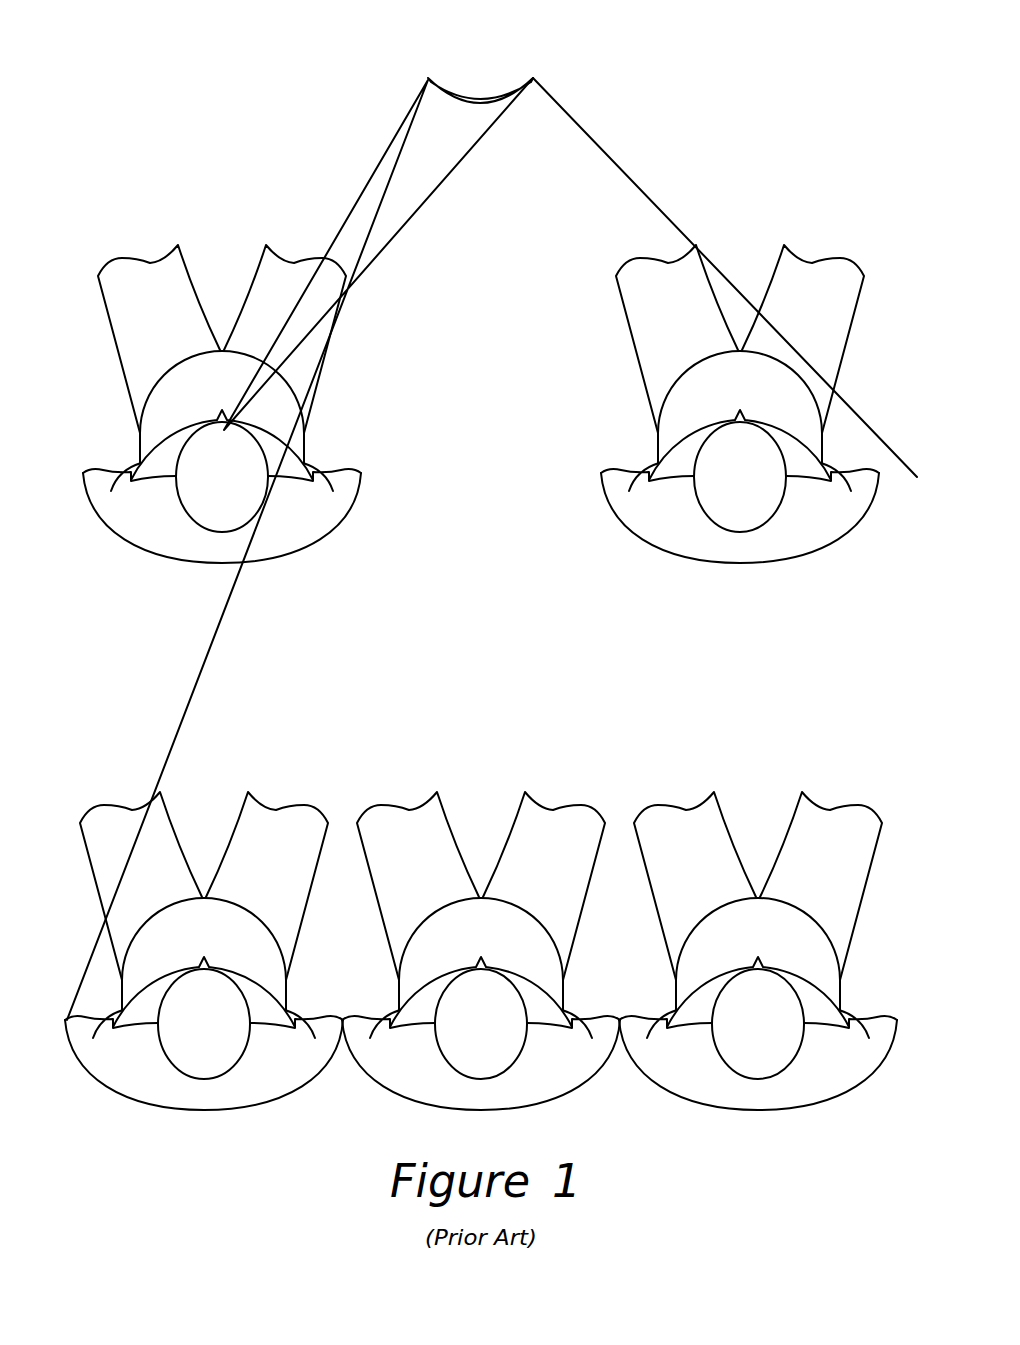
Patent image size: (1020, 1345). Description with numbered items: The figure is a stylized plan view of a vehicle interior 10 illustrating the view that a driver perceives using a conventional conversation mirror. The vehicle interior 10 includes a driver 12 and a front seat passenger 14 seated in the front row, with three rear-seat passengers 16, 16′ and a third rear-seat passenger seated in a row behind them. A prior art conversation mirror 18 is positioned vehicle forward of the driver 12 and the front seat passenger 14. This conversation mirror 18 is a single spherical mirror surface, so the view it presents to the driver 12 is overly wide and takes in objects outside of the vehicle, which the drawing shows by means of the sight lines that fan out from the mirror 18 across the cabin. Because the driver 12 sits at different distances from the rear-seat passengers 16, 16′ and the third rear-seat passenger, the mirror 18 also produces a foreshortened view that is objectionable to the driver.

The vehicle interior 10 is at (209, 206).
The driver 12 is at (160, 422).
The front seat passenger 14 is at (677, 422).
The rear-seat passenger 16 is at (278, 1077).
The rear-seat passenger 16′ is at (555, 1077).
The conversation mirror 18 is at (478, 96).